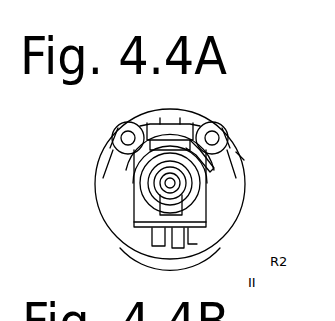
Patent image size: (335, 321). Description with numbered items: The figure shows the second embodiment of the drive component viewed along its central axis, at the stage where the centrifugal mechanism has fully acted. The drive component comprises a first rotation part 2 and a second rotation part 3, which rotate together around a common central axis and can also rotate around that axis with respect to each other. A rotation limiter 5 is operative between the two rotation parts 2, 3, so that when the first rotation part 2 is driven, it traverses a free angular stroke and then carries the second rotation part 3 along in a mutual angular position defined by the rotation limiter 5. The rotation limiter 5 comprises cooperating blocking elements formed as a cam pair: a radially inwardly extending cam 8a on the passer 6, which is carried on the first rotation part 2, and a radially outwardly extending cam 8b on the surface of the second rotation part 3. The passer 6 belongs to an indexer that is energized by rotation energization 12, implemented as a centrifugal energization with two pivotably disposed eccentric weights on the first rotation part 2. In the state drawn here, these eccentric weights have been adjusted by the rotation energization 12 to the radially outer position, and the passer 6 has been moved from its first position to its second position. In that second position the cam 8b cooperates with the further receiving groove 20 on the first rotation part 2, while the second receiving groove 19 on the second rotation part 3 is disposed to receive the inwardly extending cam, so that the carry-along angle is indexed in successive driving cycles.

The first rotation part 2 is at (196, 246).
The second rotation part 3 is at (241, 146).
The rotation limiter 5 is at (247, 162).
The passer 6 is at (199, 130).
The radially inwardly extending cam 8a is at (165, 250).
The radially outwardly extending cam 8b is at (210, 219).
The rotation energization 12 is at (97, 191).
The second receiving groove 19 is at (160, 203).
The further receiving groove 20 is at (172, 118).